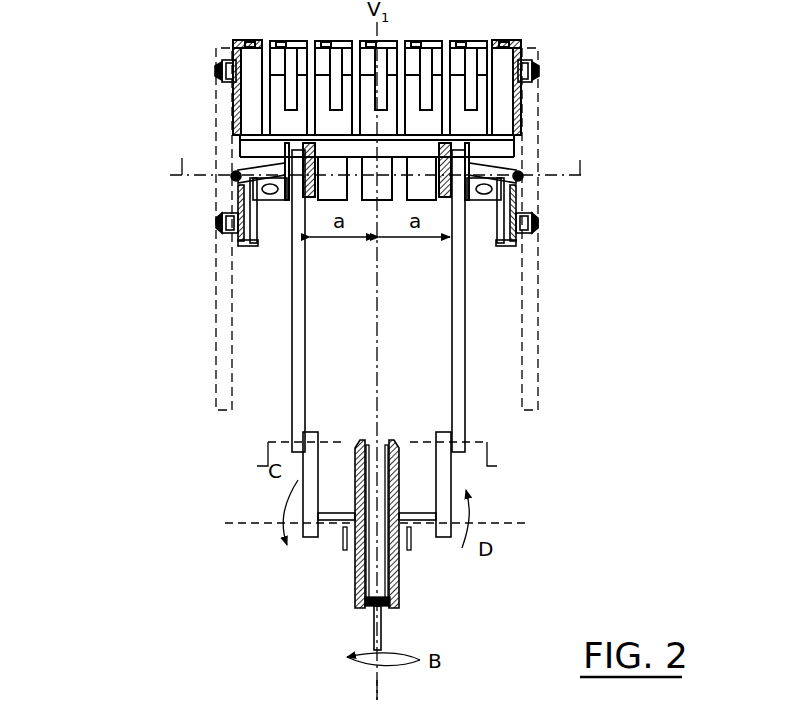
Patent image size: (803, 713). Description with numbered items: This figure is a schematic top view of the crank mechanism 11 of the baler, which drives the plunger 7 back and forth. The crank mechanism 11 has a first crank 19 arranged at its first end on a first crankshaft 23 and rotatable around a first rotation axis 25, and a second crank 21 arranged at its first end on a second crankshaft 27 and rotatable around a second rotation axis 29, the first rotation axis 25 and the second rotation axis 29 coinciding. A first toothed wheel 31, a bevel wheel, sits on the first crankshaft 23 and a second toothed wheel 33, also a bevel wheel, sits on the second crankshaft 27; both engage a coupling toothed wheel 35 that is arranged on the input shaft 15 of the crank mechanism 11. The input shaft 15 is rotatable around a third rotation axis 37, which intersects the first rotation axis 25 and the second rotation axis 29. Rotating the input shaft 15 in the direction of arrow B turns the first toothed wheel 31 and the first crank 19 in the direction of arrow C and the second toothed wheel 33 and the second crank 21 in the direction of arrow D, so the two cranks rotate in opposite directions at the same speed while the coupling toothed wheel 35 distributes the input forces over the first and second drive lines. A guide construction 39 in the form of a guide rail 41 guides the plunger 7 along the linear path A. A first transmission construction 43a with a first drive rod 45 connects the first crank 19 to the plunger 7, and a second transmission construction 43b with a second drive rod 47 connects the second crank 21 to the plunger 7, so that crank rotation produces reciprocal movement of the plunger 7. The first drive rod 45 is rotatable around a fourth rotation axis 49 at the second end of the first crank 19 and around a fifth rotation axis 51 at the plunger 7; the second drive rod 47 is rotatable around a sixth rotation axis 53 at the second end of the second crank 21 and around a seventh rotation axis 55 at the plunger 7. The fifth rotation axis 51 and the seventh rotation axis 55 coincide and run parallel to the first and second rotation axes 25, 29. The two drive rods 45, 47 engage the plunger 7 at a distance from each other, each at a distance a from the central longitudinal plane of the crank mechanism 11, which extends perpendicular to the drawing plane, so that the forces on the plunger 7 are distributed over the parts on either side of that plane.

The plunger 7 is at (572, 104).
The crank mechanism 11 is at (136, 435).
The input shaft 15 is at (382, 620).
The first crank 19 is at (312, 458).
The second crank 21 is at (447, 455).
The first crankshaft 23 is at (345, 550).
The first rotation axis 25 is at (240, 523).
The second crankshaft 27 is at (408, 550).
The second rotation axis 29 is at (515, 523).
The first toothed wheel 31 is at (355, 588).
The second toothed wheel 33 is at (399, 588).
The coupling toothed wheel 35 is at (372, 606).
The third rotation axis 37 is at (378, 683).
The guide construction 39 is at (176, 243).
The guide rail 41 is at (218, 312).
The first transmission construction 43a is at (272, 412).
The second transmission construction 43b is at (493, 400).
The first drive rod 45 is at (300, 290).
The second drive rod 47 is at (458, 272).
The fourth rotation axis 49 is at (257, 466).
The fifth rotation axis 51 is at (182, 158).
The sixth rotation axis 53 is at (497, 466).
The seventh rotation axis 55 is at (580, 160).